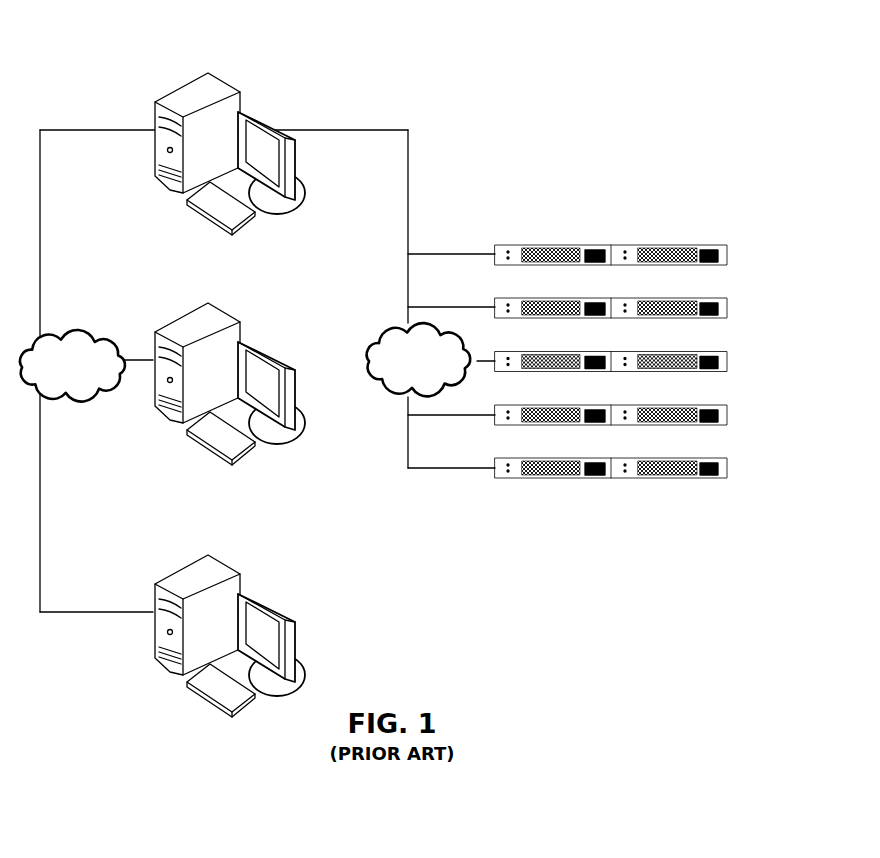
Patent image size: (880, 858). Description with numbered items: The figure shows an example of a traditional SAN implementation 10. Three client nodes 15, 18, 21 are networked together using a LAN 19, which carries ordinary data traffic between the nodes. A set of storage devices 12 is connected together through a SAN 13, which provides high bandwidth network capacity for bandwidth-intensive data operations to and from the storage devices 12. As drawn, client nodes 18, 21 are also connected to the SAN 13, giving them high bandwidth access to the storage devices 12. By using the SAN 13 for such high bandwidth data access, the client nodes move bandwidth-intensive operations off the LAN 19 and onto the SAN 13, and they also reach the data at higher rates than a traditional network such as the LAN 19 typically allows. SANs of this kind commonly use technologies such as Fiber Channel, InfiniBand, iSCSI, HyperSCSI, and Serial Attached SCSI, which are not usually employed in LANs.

The traditional SAN implementation 10 is at (390, 52).
The client node 21 is at (264, 118).
The client node 18 is at (264, 348).
The client node 15 is at (264, 600).
The LAN 19 is at (77, 402).
The SAN 13 is at (400, 396).
The storage devices 12 is at (704, 252).